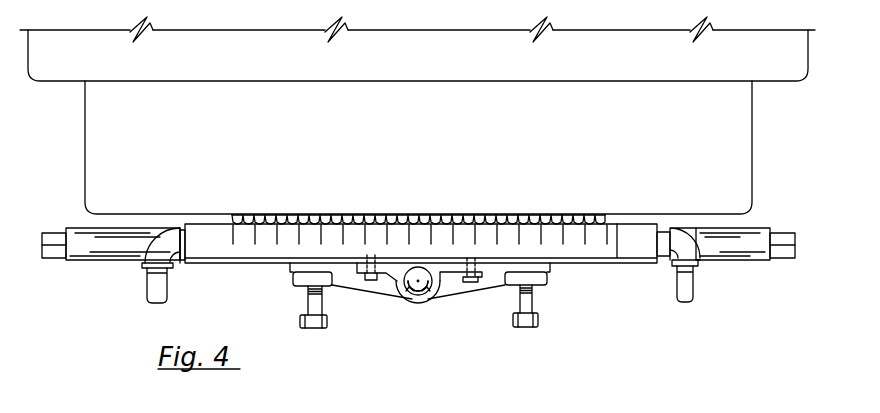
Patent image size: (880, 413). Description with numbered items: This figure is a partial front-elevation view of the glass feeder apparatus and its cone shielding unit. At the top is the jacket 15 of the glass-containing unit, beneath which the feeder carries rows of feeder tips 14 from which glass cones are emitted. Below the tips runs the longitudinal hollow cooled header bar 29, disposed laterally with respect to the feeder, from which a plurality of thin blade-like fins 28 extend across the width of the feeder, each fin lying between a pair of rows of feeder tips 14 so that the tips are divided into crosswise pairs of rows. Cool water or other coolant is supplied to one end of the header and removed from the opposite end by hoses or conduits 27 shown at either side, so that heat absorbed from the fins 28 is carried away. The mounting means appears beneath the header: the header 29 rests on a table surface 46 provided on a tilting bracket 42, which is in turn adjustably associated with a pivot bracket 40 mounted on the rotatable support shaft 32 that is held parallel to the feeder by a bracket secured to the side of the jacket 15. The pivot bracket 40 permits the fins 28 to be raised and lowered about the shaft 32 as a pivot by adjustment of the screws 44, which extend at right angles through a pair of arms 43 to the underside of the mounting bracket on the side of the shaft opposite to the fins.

The feeder tips 14 is at (606, 216).
The jacket 15 is at (784, 82).
The hoses or conduits 27 is at (168, 280).
The blade-like fins 28 is at (540, 237).
The header bar 29 is at (607, 239).
The support shaft 32 is at (709, 261).
The pivot bracket 40 is at (406, 288).
The tilting bracket 42 is at (394, 288).
The arms 43 is at (452, 293).
The screws 44 is at (313, 328).
The table surface 46 is at (355, 274).